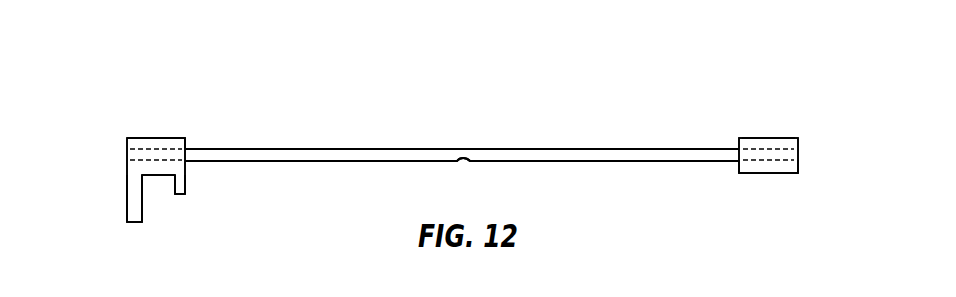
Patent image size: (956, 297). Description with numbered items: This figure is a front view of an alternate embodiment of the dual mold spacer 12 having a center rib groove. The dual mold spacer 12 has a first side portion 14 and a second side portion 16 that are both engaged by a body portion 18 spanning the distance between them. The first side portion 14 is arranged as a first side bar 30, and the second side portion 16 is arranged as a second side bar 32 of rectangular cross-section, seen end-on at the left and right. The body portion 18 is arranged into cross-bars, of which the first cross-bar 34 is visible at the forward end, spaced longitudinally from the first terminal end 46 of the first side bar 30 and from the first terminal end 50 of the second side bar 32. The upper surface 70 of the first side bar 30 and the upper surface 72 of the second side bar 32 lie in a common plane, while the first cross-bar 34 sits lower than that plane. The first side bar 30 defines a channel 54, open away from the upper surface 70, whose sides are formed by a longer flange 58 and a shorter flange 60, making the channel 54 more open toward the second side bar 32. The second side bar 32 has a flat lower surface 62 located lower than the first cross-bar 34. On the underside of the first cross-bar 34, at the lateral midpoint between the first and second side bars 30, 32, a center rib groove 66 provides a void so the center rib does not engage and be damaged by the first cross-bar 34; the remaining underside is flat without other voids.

The dual mold spacer 12 is at (618, 60).
The first side portion 14 is at (126, 161).
The second side portion 16 is at (739, 161).
The body portion 18 is at (325, 148).
The first side bar 30 is at (140, 137).
The second side bar 32 is at (752, 140).
The first cross-bar 34 is at (453, 148).
The first terminal end 46 is at (169, 139).
The first terminal end 50 is at (775, 173).
The channel 54 is at (156, 200).
The flange 58 is at (128, 195).
The flange 60 is at (185, 183).
The lower surface 62 is at (748, 175).
The center rib groove 66 is at (467, 163).
The upper surface 70 is at (155, 127).
The upper surface 72 is at (764, 133).